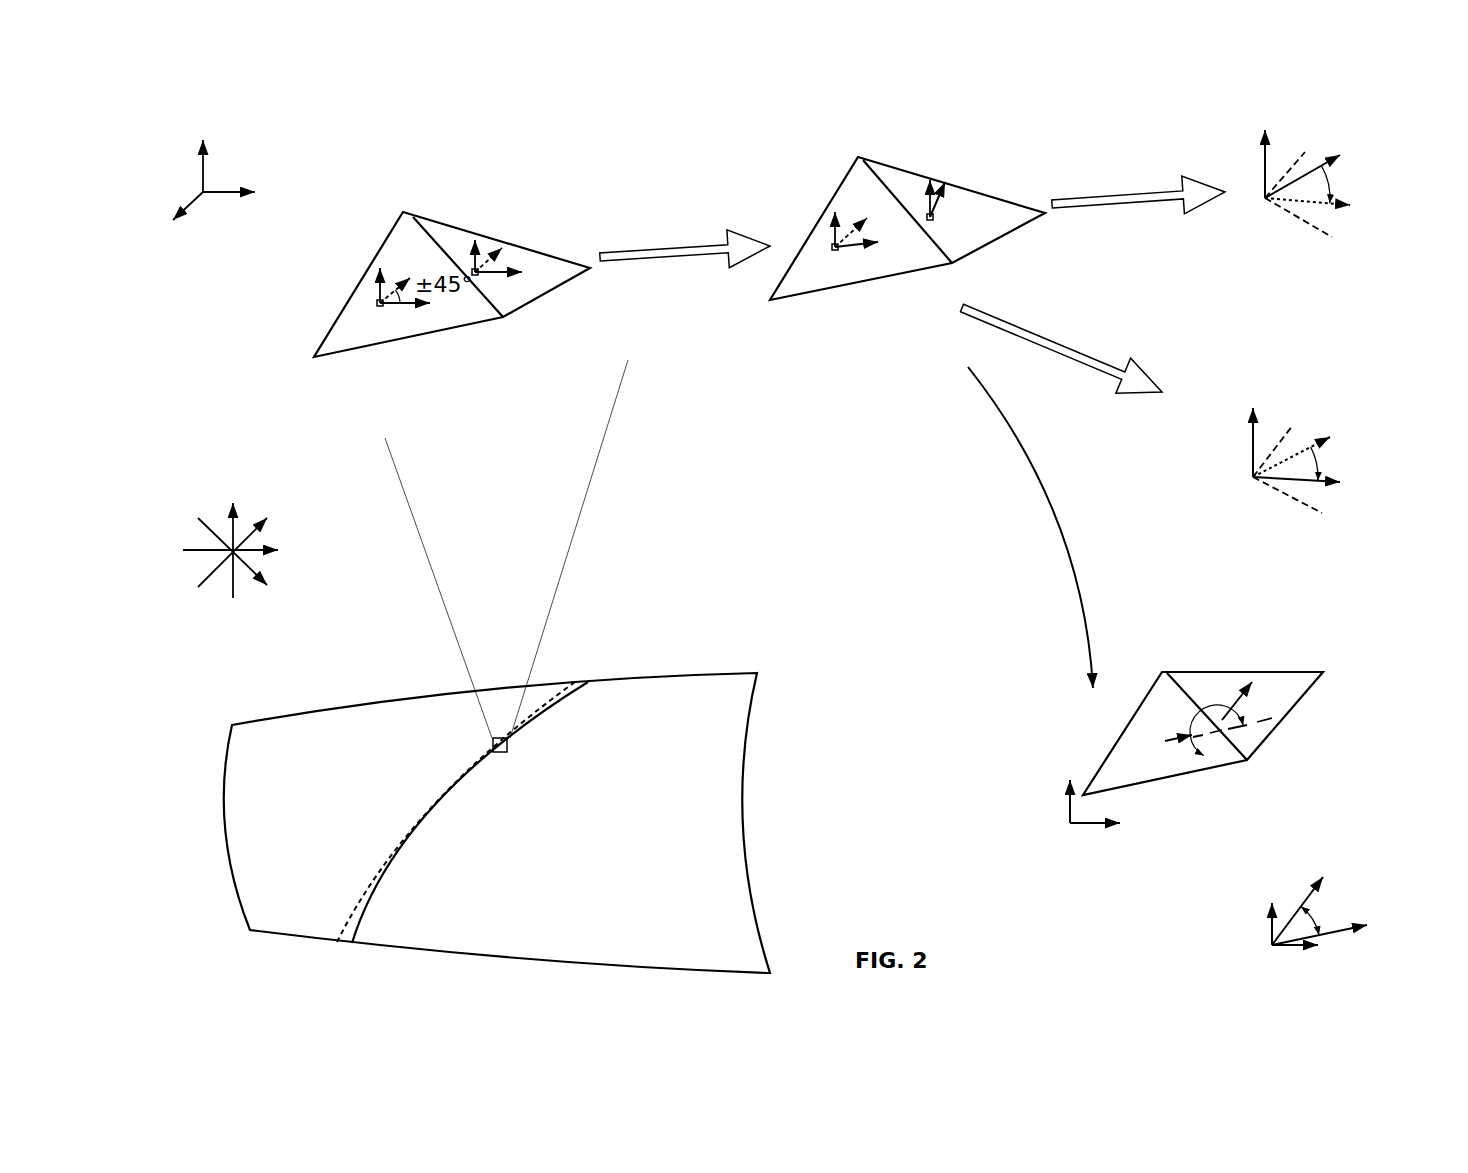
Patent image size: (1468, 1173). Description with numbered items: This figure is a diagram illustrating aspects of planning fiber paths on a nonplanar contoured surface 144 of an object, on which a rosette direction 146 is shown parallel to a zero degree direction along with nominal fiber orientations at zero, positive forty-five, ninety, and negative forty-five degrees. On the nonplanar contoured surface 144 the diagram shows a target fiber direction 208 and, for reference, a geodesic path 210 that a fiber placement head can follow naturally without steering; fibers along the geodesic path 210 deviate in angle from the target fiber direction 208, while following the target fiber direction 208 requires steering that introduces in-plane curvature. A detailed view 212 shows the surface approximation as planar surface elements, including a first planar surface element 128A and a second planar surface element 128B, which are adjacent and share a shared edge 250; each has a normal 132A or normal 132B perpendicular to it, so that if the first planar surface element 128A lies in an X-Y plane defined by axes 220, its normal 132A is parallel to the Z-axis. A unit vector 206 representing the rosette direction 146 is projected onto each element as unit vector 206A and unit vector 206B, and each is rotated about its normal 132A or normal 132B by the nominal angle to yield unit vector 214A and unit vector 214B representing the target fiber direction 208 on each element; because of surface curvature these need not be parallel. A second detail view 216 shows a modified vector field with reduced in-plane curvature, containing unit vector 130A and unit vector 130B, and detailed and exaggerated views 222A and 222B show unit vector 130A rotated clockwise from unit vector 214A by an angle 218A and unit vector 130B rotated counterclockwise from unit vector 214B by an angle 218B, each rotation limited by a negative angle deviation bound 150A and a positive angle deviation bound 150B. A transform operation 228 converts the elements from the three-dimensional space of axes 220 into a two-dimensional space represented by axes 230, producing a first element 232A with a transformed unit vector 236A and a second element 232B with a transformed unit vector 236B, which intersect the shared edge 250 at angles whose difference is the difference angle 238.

The axes 220 is at (174, 180).
The detailed view 212 is at (456, 436).
The second detail view 216 is at (856, 206).
The normal 132A is at (761, 341).
The normal 132B is at (812, 186).
The unit vector 214A is at (863, 319).
The unit vector 214B is at (912, 235).
The first planar surface element 128A is at (528, 346).
The second planar surface element 128B is at (861, 265).
The unit vector 206A is at (444, 330).
The unit vector 206B is at (546, 301).
The unit vector 206 is at (251, 566).
The rosette direction 146 is at (375, 412).
The shared edge 250 is at (992, 410).
The unit vector 130A is at (1098, 371).
The unit vector 130B is at (1192, 162).
The detailed and exaggerated view 222A is at (1274, 427).
The detailed and exaggerated view 222B is at (1222, 178).
The negative angle deviation bound 150A is at (1243, 289).
The positive angle deviation bound 150B is at (1338, 384).
The angle 218A is at (1383, 451).
The angle 218B is at (1389, 188).
The transform operation 228 is at (1007, 527).
The axes 230 is at (1049, 821).
The first element 232A is at (1187, 799).
The second element 232B is at (1288, 653).
The transformed unit vector 236A is at (1241, 837).
The transformed unit vector 236B is at (1273, 807).
The difference angle 238 is at (1330, 938).
The nonplanar contoured surface 144 is at (544, 823).
The target fiber direction 208 is at (420, 812).
The geodesic path 210 is at (470, 815).